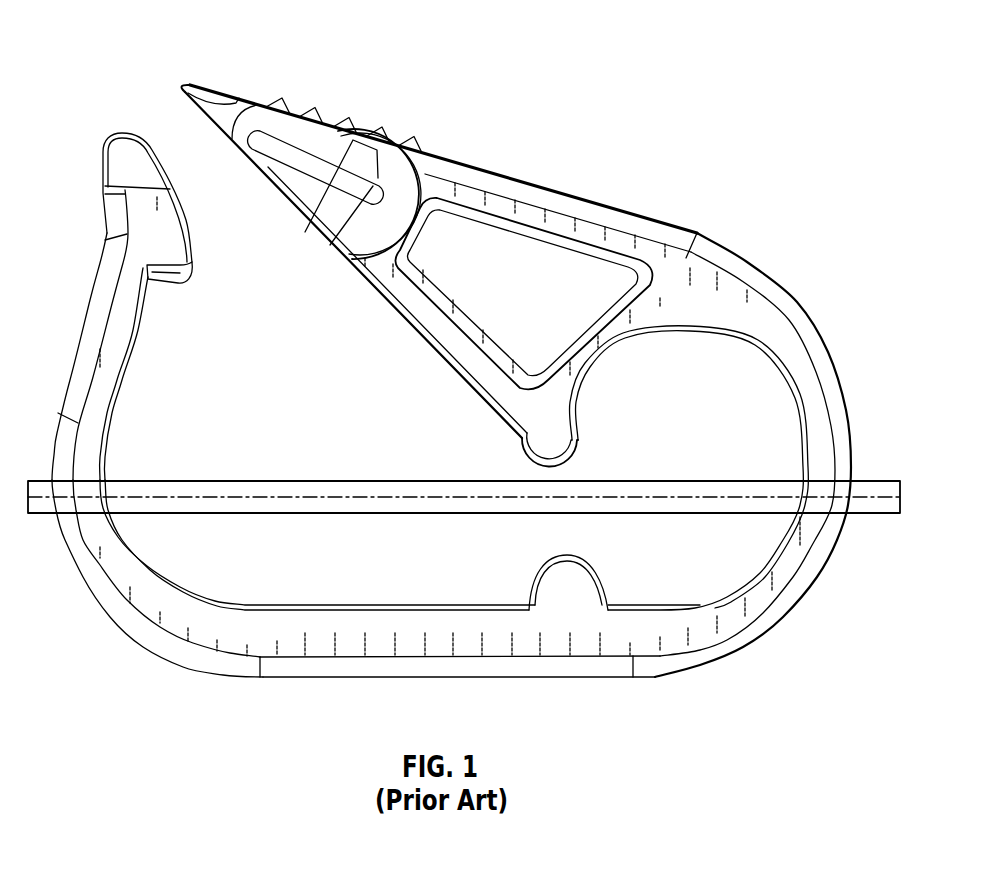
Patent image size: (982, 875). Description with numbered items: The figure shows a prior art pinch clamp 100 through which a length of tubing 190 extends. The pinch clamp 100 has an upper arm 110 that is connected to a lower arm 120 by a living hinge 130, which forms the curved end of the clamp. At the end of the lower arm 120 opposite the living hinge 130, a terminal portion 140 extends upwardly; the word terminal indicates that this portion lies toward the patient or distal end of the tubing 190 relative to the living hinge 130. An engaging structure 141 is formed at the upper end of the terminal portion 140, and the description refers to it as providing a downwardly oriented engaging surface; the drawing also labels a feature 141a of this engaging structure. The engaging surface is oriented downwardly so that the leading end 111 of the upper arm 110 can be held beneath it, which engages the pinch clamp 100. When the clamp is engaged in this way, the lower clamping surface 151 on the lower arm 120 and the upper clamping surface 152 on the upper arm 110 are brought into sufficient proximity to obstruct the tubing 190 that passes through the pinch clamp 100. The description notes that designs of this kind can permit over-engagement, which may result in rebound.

The pinch clamp 100 is at (543, 114).
The upper arm 110 is at (436, 150).
The leading end 111 is at (184, 84).
The lower arm 120 is at (275, 679).
The living hinge 130 is at (822, 547).
The terminal portion 140 is at (97, 266).
The engaging structure 141 is at (114, 133).
The barb tab 141a is at (172, 266).
The lower clamping surface 151 is at (562, 594).
The upper clamping surface 152 is at (526, 452).
The tubing 190 is at (862, 481).